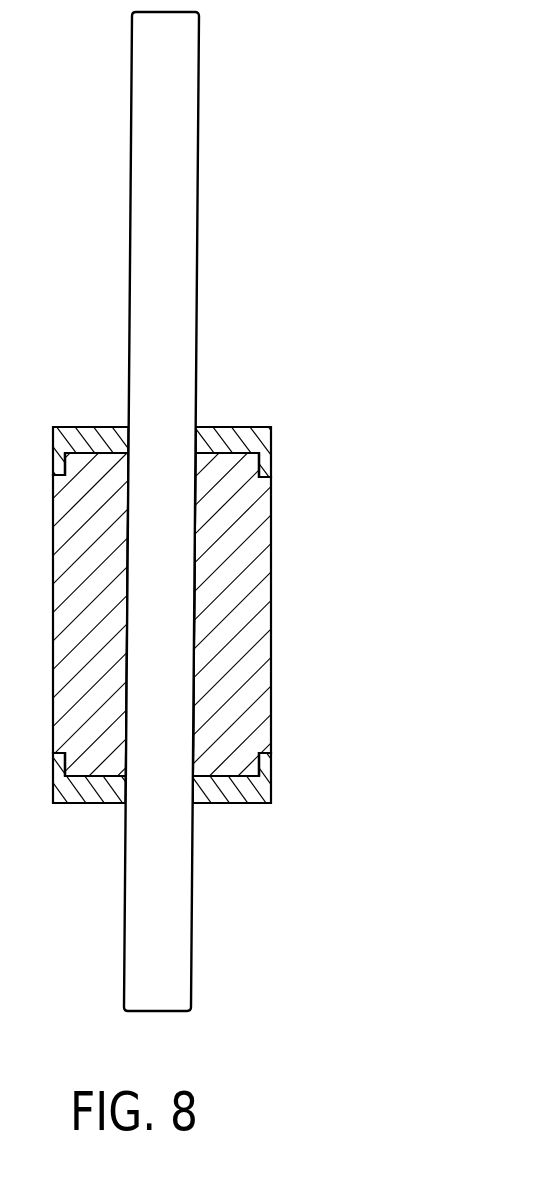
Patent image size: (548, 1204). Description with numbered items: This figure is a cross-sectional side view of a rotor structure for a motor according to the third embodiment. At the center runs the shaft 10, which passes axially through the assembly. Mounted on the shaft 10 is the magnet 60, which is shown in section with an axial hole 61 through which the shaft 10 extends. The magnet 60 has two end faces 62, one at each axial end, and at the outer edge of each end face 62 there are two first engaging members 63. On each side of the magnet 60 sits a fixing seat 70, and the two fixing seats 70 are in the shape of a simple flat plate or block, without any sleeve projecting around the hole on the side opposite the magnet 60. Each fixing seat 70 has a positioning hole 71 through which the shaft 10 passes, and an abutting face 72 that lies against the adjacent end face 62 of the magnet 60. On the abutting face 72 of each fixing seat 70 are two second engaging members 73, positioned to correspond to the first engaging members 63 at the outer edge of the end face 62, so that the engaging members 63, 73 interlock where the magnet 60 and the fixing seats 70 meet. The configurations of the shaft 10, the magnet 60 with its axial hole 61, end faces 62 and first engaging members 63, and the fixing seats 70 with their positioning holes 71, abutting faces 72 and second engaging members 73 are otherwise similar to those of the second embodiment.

The shaft 10 is at (176, 267).
The magnet 60 is at (250, 607).
The axial hole 61 is at (192, 615).
The end face 62 is at (231, 616).
The first engaging member 63 is at (264, 614).
The fixing seat 70 is at (252, 433).
The positioning hole 71 is at (195, 438).
The abutting face 72 is at (242, 453).
The second engaging member 73 is at (272, 478).